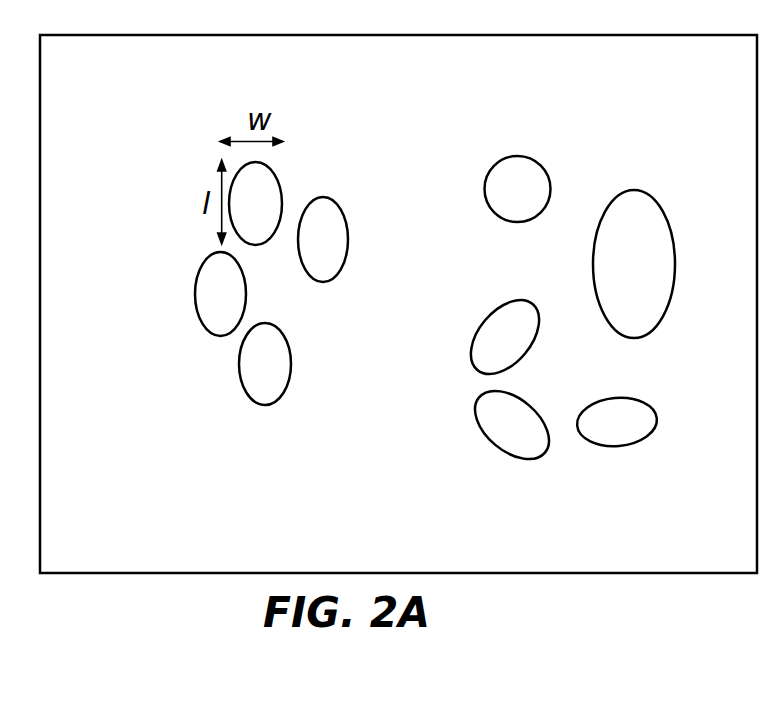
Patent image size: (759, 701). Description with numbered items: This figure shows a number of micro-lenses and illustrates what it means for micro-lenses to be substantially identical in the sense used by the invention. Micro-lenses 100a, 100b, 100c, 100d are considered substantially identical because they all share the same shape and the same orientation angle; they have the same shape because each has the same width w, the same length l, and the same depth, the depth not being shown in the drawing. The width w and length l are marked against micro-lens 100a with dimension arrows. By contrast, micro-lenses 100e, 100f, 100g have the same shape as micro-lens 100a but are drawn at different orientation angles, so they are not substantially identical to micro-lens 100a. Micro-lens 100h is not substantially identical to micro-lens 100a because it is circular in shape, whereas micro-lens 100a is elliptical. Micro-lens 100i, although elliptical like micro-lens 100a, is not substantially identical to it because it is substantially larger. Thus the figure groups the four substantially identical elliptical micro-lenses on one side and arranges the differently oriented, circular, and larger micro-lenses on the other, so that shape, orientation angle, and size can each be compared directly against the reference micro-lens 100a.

The micro-lens 100a is at (252, 178).
The micro-lens 100b is at (213, 270).
The micro-lens 100c is at (243, 380).
The micro-lens 100d is at (335, 215).
The micro-lens 100e is at (620, 445).
The micro-lens 100f is at (493, 440).
The micro-lens 100g is at (474, 363).
The micro-lens 100h is at (510, 173).
The micro-lens 100i is at (633, 190).